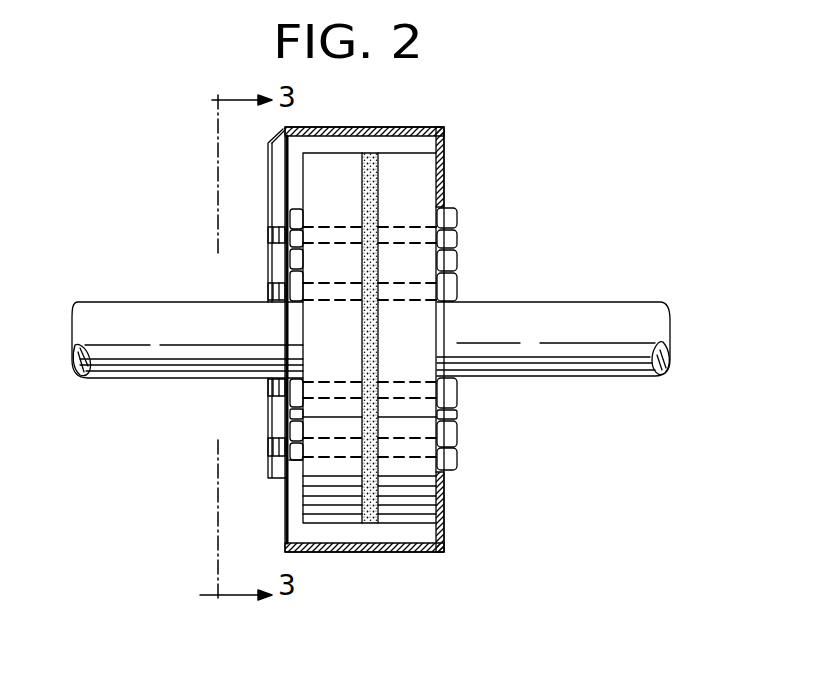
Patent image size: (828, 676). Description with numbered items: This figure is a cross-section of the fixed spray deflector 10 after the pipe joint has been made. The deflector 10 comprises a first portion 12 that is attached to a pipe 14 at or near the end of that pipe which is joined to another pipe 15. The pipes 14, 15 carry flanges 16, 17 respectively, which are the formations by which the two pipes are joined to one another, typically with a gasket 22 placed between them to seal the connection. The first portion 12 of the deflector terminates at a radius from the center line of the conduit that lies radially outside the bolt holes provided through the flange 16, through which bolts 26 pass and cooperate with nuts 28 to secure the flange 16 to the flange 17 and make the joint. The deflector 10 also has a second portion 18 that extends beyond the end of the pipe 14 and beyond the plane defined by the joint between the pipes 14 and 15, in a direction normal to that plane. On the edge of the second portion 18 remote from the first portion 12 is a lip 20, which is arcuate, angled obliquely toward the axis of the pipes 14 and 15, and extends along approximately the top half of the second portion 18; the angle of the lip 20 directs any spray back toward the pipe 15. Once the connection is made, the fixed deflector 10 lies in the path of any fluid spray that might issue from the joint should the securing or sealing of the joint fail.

The fixed spray deflector 10 is at (437, 128).
The first portion 12 is at (446, 149).
The pipe 14 is at (575, 308).
The pipe 15 is at (142, 308).
The flange 16 is at (413, 202).
The flange 17 is at (313, 190).
The second portion 18 is at (377, 127).
The lip 20 is at (274, 140).
The gasket 22 is at (376, 523).
The bolts 26 is at (270, 440).
The nuts 28 is at (290, 271).